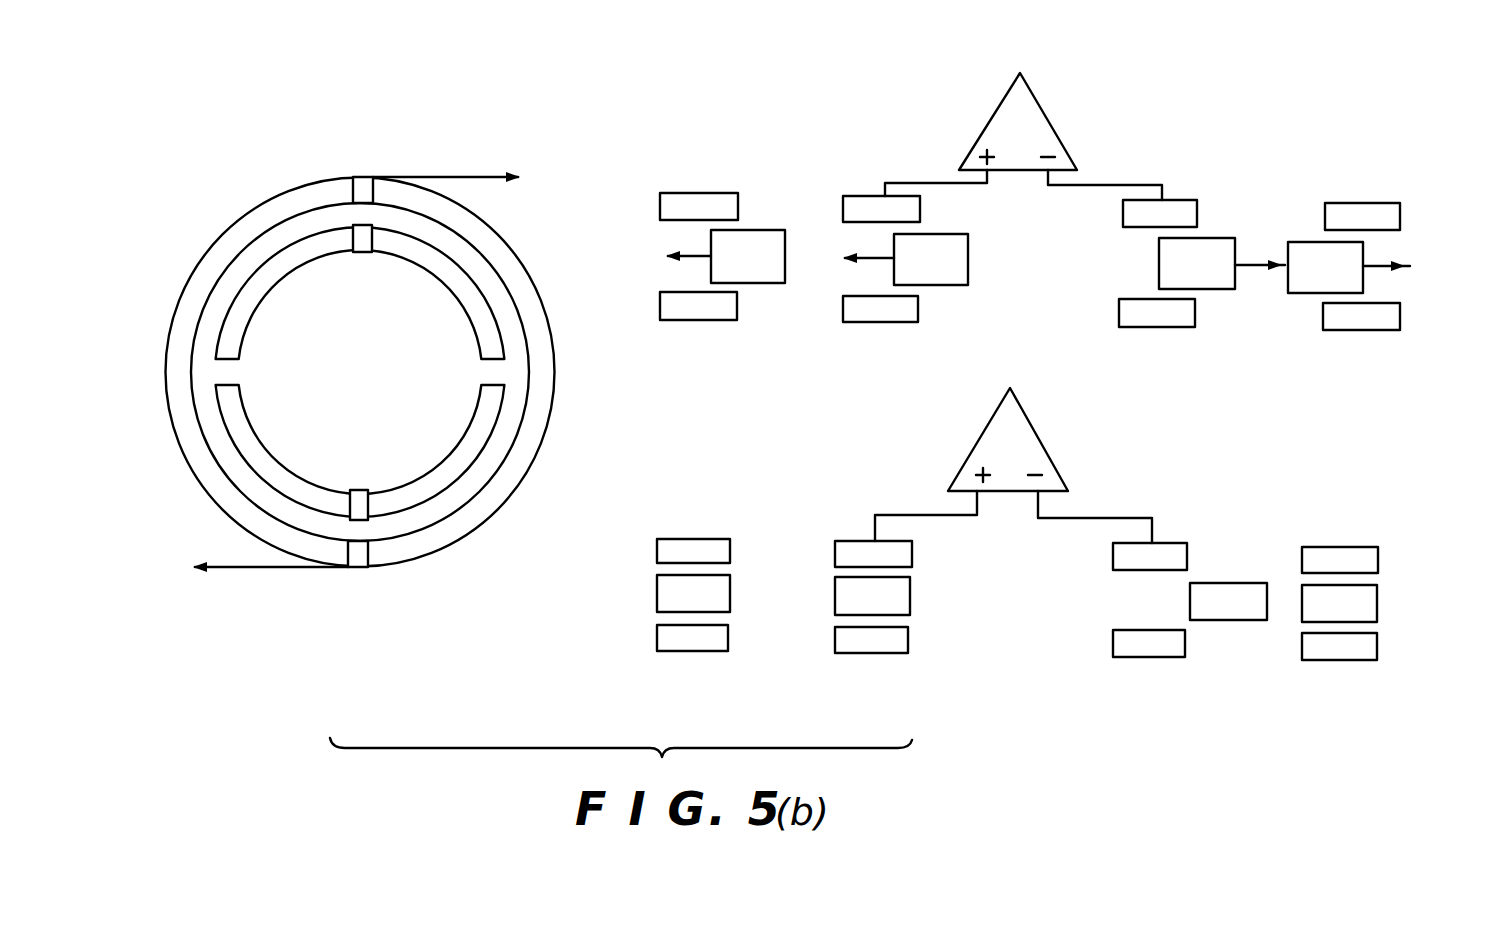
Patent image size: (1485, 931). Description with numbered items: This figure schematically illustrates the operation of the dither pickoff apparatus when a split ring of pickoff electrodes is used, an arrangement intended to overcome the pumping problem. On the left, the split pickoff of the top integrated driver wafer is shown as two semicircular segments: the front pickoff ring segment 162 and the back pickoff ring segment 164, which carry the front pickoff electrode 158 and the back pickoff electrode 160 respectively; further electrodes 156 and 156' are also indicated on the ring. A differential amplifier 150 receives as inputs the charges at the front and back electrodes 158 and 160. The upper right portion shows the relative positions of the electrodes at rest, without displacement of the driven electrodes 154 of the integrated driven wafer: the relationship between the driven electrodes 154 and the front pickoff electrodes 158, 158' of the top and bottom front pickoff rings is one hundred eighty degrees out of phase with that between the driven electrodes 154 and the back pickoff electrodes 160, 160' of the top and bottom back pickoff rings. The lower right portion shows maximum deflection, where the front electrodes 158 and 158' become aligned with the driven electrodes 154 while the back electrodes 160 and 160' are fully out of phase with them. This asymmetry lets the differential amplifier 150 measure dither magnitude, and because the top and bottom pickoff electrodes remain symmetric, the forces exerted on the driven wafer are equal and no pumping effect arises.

The differential amplifier 150 is at (1050, 121).
The driven electrodes 154 is at (763, 265).
The outer ring contact 156 is at (820, 374).
The outer ring contact (complementary) 156' is at (1030, 503).
The front pickoff electrode 158 is at (680, 352).
The front pickoff electrode 158' is at (911, 479).
The back pickoff electrode 160 is at (803, 353).
The back pickoff electrode 160' is at (1159, 502).
The front pickoff ring segment 162 is at (241, 443).
The back pickoff ring segment 164 is at (241, 303).